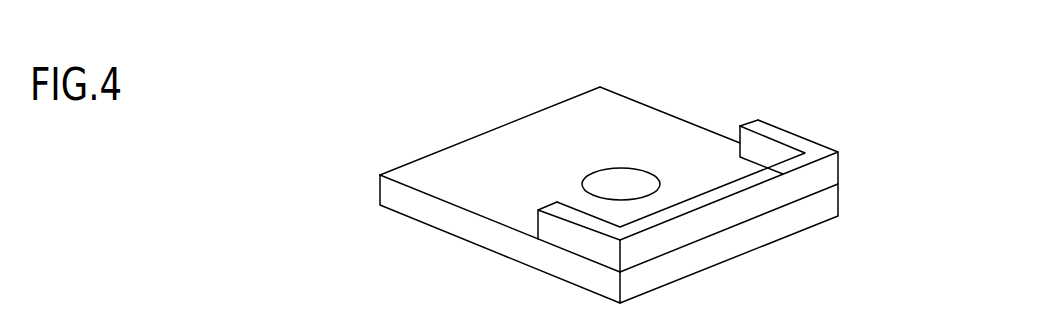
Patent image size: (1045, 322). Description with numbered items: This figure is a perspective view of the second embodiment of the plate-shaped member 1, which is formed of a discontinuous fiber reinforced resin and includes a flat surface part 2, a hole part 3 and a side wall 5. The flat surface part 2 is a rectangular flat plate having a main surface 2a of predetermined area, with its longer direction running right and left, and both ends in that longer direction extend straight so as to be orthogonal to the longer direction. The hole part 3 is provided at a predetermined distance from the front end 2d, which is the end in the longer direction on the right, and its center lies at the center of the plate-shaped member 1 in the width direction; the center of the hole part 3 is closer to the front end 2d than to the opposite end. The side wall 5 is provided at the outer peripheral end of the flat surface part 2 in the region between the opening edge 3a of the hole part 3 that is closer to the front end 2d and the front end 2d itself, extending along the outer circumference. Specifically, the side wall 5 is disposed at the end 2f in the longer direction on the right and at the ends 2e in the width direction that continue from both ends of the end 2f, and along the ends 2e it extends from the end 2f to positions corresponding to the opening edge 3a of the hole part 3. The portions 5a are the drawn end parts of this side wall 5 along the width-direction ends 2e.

The plate-shaped member 1 is at (833, 78).
The flat surface part 2 is at (634, 96).
The main surface 2a is at (460, 172).
The front end 2d is at (743, 237).
The ends in the width direction 2e is at (440, 202).
The end in the longer direction 2f is at (493, 130).
The hole part 3 is at (617, 184).
The opening edge 3a is at (637, 170).
The side wall 5 is at (825, 178).
The end portion of frame 5a is at (541, 206).